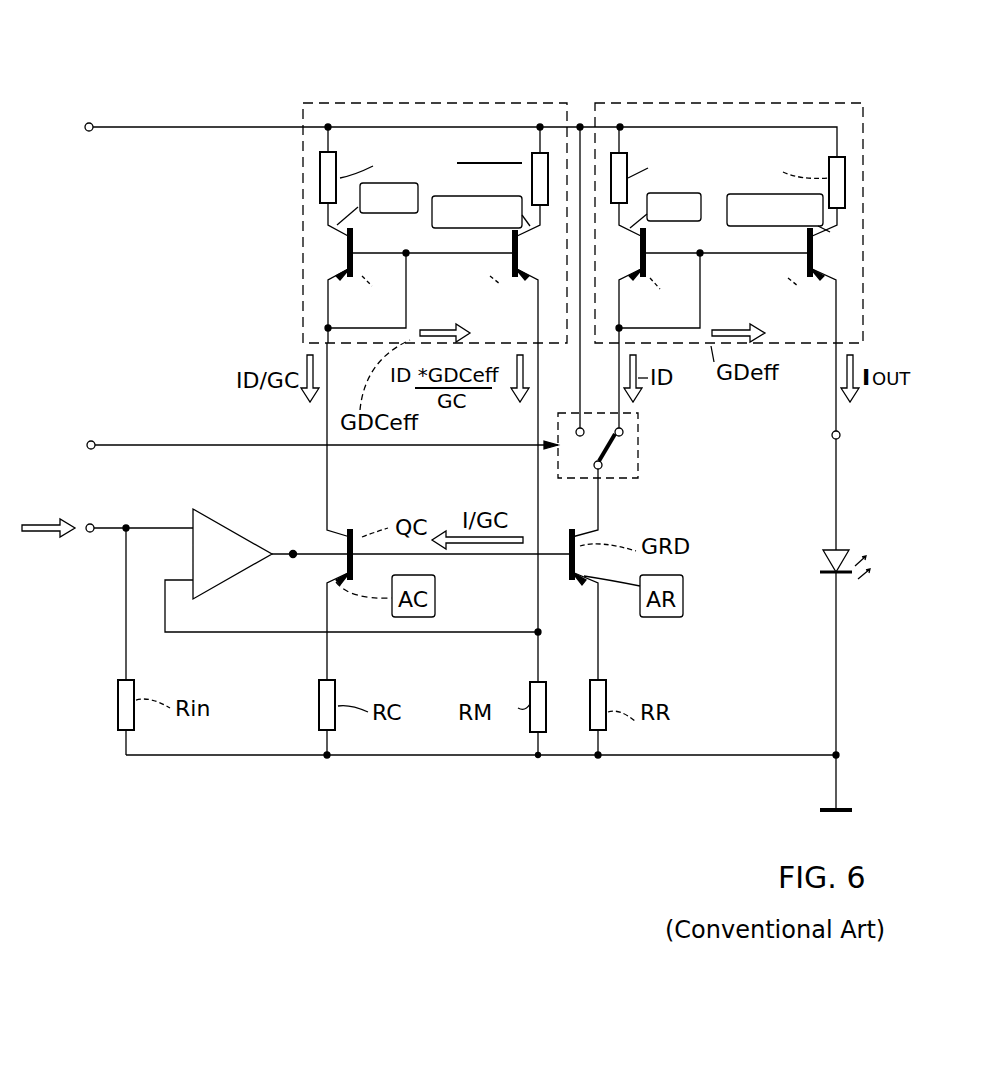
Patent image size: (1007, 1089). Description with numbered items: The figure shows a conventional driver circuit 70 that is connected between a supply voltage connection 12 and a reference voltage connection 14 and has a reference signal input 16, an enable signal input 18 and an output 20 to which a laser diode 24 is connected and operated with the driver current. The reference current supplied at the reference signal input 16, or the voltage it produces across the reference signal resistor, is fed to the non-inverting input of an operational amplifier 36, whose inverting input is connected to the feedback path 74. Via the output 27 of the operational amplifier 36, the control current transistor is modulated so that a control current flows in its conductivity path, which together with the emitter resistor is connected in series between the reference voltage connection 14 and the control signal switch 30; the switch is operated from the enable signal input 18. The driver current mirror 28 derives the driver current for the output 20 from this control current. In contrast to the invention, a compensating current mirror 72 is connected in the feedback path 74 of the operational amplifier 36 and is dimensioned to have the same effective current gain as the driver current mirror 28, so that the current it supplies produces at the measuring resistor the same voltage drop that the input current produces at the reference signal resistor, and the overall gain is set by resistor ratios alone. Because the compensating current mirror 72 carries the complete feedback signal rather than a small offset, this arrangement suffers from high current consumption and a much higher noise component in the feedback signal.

The supply voltage connection 12 is at (85, 125).
The reference voltage connection 14 is at (818, 799).
The reference signal input 16 is at (85, 538).
The enable signal input 18 is at (87, 448).
The output 20 is at (841, 434).
The laser diode 24 is at (814, 558).
The output of the operational amplifier 27 is at (296, 543).
The driver current mirror 28 is at (715, 91).
The control signal switch 30 is at (640, 450).
The operational amplifier 36 is at (240, 578).
The driver circuit 70 is at (353, 808).
The compensating current mirror 72 is at (453, 92).
The feedback path 74 is at (280, 655).